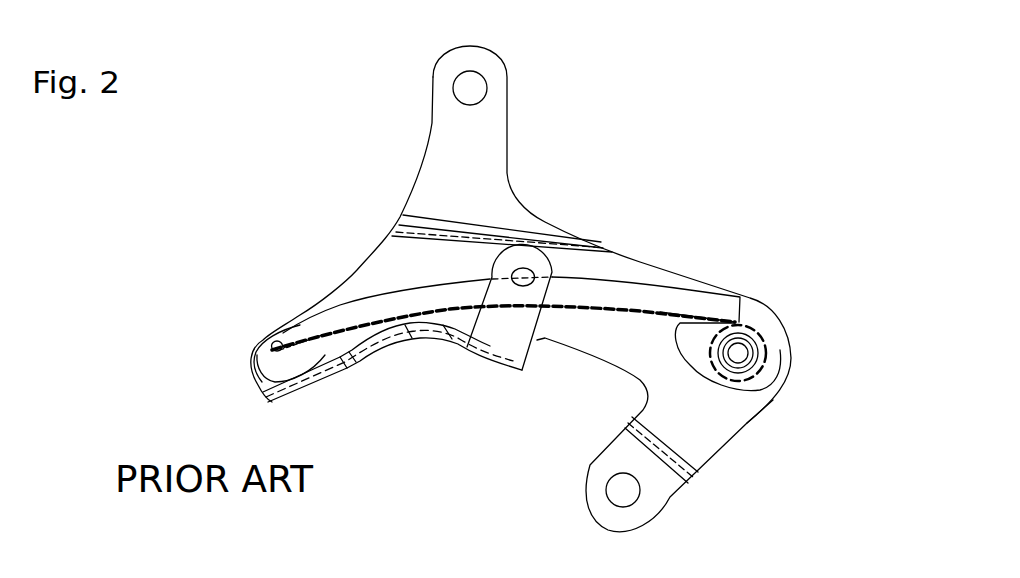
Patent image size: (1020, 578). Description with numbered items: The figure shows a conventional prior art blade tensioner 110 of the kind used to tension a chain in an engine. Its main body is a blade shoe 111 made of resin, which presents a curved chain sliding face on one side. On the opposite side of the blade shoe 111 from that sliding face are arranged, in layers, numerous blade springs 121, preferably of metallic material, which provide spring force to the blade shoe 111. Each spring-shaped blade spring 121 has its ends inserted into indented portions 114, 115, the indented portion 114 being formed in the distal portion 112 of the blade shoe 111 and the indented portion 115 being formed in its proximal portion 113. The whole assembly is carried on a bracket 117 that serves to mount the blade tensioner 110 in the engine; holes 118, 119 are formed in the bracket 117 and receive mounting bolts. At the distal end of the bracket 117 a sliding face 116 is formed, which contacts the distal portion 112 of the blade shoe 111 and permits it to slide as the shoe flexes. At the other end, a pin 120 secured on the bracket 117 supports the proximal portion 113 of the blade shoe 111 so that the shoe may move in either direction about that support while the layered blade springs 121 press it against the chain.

The blade tensioner 110 is at (738, 96).
The blade shoe 111 is at (366, 303).
The distal portion 112 is at (257, 370).
The proximal portion 113 is at (737, 385).
The indented portion 114 is at (280, 343).
The indented portion 115 is at (745, 318).
The sliding face 116 is at (295, 390).
The bracket 117 is at (712, 427).
The hole 118 is at (620, 487).
The hole 119 is at (472, 87).
The pin 120 is at (752, 352).
The blade spring 121 is at (648, 305).